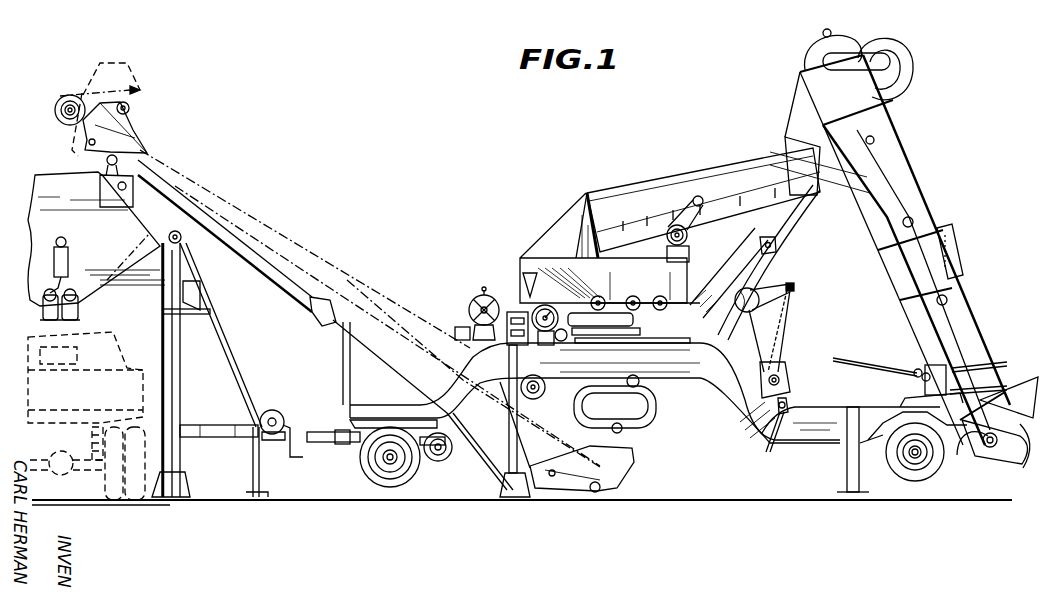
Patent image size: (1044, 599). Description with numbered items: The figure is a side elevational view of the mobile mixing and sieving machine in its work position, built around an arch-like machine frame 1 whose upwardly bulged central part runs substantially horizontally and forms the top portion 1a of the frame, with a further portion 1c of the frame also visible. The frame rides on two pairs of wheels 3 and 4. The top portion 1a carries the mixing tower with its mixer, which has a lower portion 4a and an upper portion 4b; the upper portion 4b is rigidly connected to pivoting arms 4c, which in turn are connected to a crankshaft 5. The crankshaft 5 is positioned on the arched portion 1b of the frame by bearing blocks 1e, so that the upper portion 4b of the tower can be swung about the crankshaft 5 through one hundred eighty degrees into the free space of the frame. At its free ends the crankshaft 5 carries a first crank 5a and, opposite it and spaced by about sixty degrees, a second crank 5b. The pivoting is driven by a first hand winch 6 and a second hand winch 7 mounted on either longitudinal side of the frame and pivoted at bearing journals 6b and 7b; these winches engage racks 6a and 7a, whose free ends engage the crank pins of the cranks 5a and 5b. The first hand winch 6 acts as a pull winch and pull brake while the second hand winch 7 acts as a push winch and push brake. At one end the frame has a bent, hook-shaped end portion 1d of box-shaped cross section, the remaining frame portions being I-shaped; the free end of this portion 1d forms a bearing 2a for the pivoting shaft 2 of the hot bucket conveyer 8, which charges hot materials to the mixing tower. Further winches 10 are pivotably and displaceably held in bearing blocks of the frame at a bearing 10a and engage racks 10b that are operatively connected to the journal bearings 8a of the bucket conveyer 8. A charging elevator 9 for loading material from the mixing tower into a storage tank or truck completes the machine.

The machine frame 1 is at (561, 383).
The top portion of the frame 1a is at (603, 343).
The arched portion of the machine frame 1b is at (714, 358).
The loading conveyor 1c is at (402, 410).
The hook-shaped end portion 1d is at (958, 458).
The bearing blocks 1e is at (776, 350).
The pivoting shaft 2 is at (1020, 420).
The bearing 2a is at (990, 450).
The wheels 3 is at (893, 466).
The wheels 4 is at (363, 470).
The lower portion of the mixing tower 4a is at (677, 303).
The upper portion of the mixing tower 4b is at (710, 215).
The pivoting arms 4c is at (810, 210).
The crankshaft 5 is at (712, 318).
The first crank 5a is at (792, 289).
The second crank 5b is at (770, 252).
The first hand winch 6 is at (782, 380).
The rack 6a is at (786, 312).
The bearing journal 6b is at (784, 415).
The second hand winch 7 is at (758, 383).
The rack 7a is at (782, 330).
The bearing journal 7b is at (777, 432).
The hot bucket conveyer 8 is at (897, 153).
The journal bearings of the bucket conveyer 8a is at (993, 360).
The bracket 9 is at (907, 393).
The winches 10 is at (927, 358).
The bearing 10a is at (914, 370).
The racks 10b is at (850, 360).